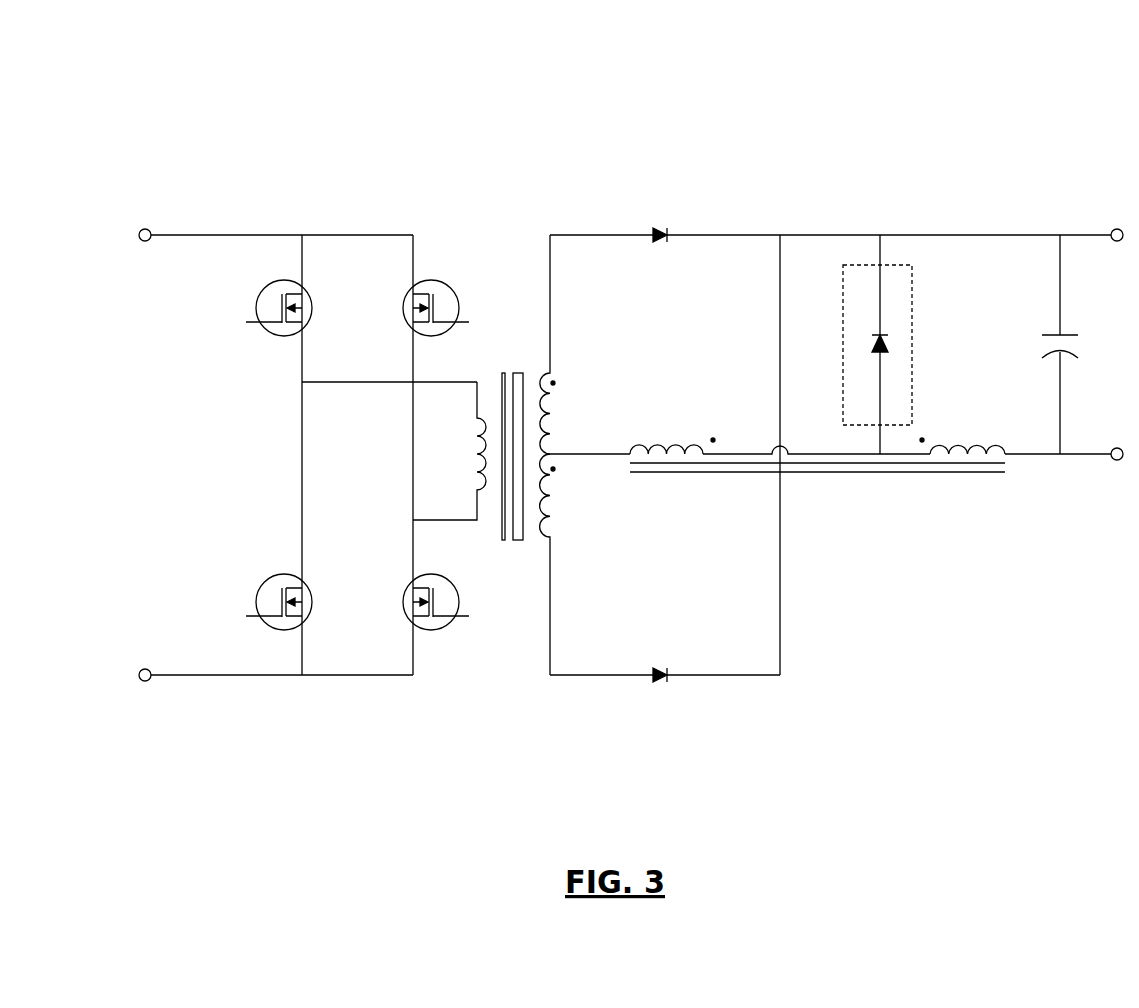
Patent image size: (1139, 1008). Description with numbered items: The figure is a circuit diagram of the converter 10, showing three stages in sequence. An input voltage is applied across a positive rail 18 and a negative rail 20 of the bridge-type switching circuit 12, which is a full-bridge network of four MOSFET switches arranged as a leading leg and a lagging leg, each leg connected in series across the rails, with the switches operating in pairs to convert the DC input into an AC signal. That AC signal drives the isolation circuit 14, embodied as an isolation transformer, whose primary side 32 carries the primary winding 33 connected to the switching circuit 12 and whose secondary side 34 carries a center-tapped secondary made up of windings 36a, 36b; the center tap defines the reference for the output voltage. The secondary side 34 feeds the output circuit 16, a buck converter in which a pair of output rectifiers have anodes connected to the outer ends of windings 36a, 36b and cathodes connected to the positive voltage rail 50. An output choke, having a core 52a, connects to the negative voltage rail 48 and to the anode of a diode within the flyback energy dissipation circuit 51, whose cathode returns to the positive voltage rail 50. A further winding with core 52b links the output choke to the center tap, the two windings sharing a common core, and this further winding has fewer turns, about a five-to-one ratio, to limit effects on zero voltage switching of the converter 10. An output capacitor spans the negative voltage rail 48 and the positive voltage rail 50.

The converter 10 is at (905, 672).
The bridge-type switching circuit 12 is at (252, 112).
The isolation circuit 14 is at (501, 212).
The output circuit 16 is at (885, 112).
The positive rail 18 is at (222, 235).
The negative rail 20 is at (220, 675).
The primary side 32 is at (476, 362).
The primary winding 33 is at (484, 494).
The secondary side 34 is at (533, 562).
The secondary winding 36a is at (538, 412).
The secondary winding 36b is at (538, 500).
The negative voltage rail 48 is at (1066, 455).
The positive voltage rail 50 is at (1060, 235).
The flyback energy dissipation circuit 51 is at (912, 345).
The core 52a is at (960, 472).
The core 52b is at (678, 472).